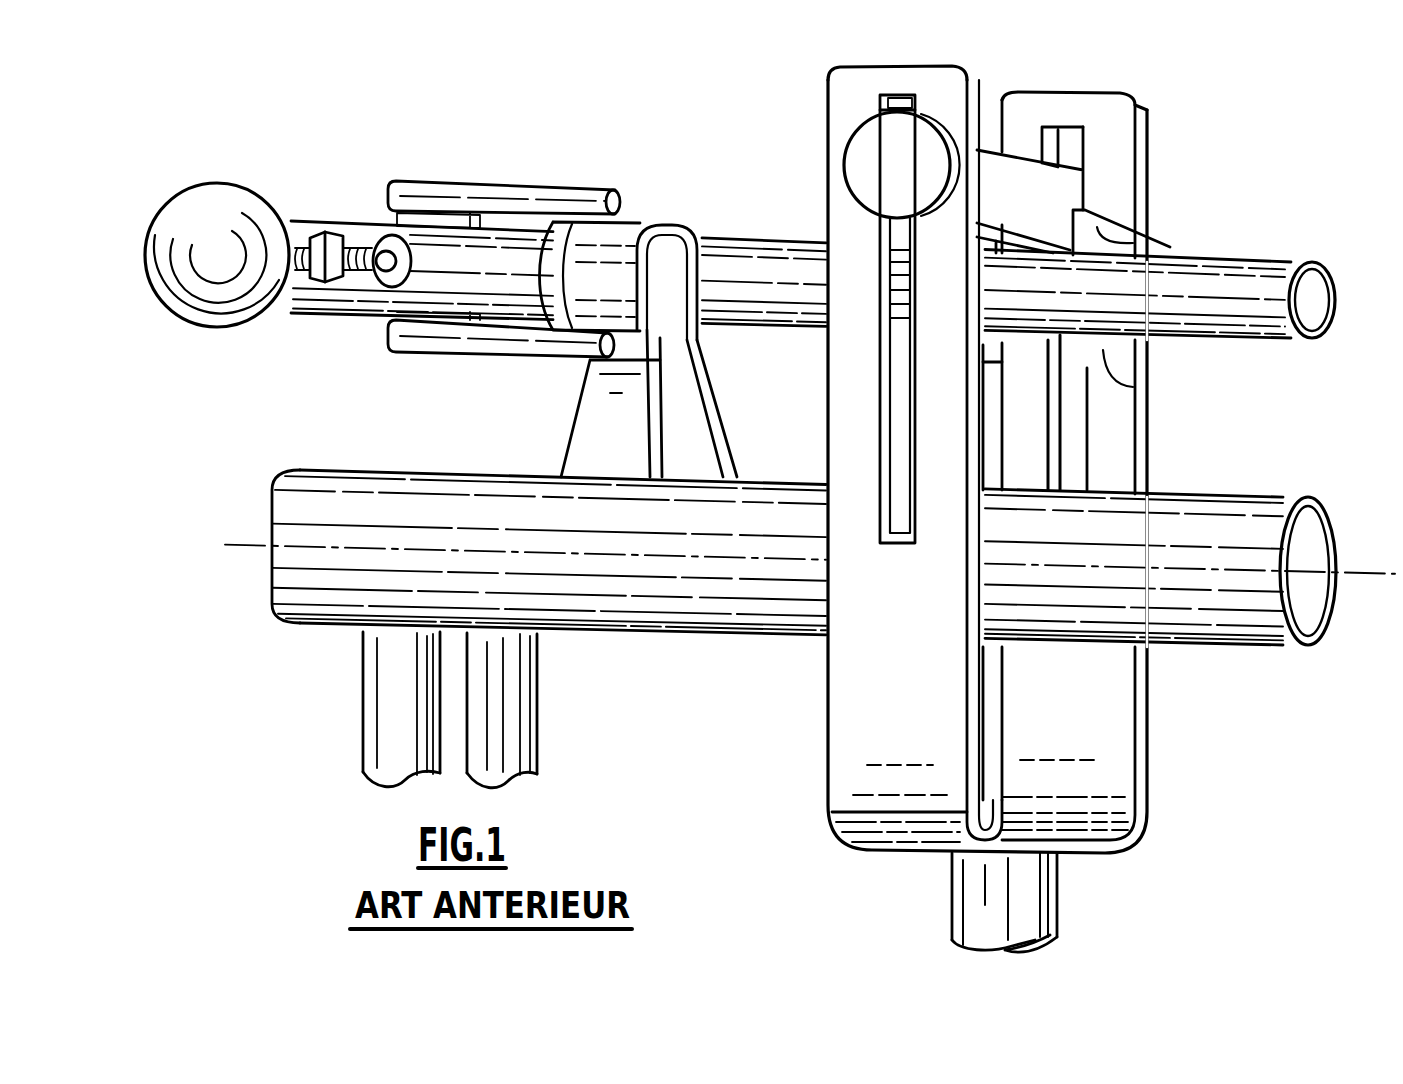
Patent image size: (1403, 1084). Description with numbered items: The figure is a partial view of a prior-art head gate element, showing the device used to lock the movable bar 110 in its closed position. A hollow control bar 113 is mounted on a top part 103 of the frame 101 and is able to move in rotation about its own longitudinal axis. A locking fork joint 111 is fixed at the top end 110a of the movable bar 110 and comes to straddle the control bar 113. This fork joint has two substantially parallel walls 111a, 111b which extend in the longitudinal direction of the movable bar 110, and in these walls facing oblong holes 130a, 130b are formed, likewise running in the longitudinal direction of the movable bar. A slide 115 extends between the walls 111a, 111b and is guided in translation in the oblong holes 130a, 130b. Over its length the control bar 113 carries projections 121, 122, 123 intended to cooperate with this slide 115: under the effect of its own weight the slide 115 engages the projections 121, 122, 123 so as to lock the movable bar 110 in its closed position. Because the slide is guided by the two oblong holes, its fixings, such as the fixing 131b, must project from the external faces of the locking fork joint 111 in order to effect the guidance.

The frame 101 is at (262, 605).
The top part of the frame 103 is at (1185, 537).
The movable bar 110 is at (940, 920).
The top end of the movable bar 110a is at (1015, 878).
The locking fork joint 111 is at (1165, 722).
The first wall of the locking fork joint 111a is at (1087, 745).
The second wall of the locking fork joint 111b is at (905, 620).
The hollow control bar 113 is at (1250, 300).
The slide 115 is at (1062, 190).
The projection 121 is at (1002, 350).
The projection 122 is at (1078, 368).
The projection 123 is at (1145, 247).
The oblong hole 130a is at (1068, 148).
The oblong hole 130b is at (905, 405).
The fixing 131b is at (870, 163).